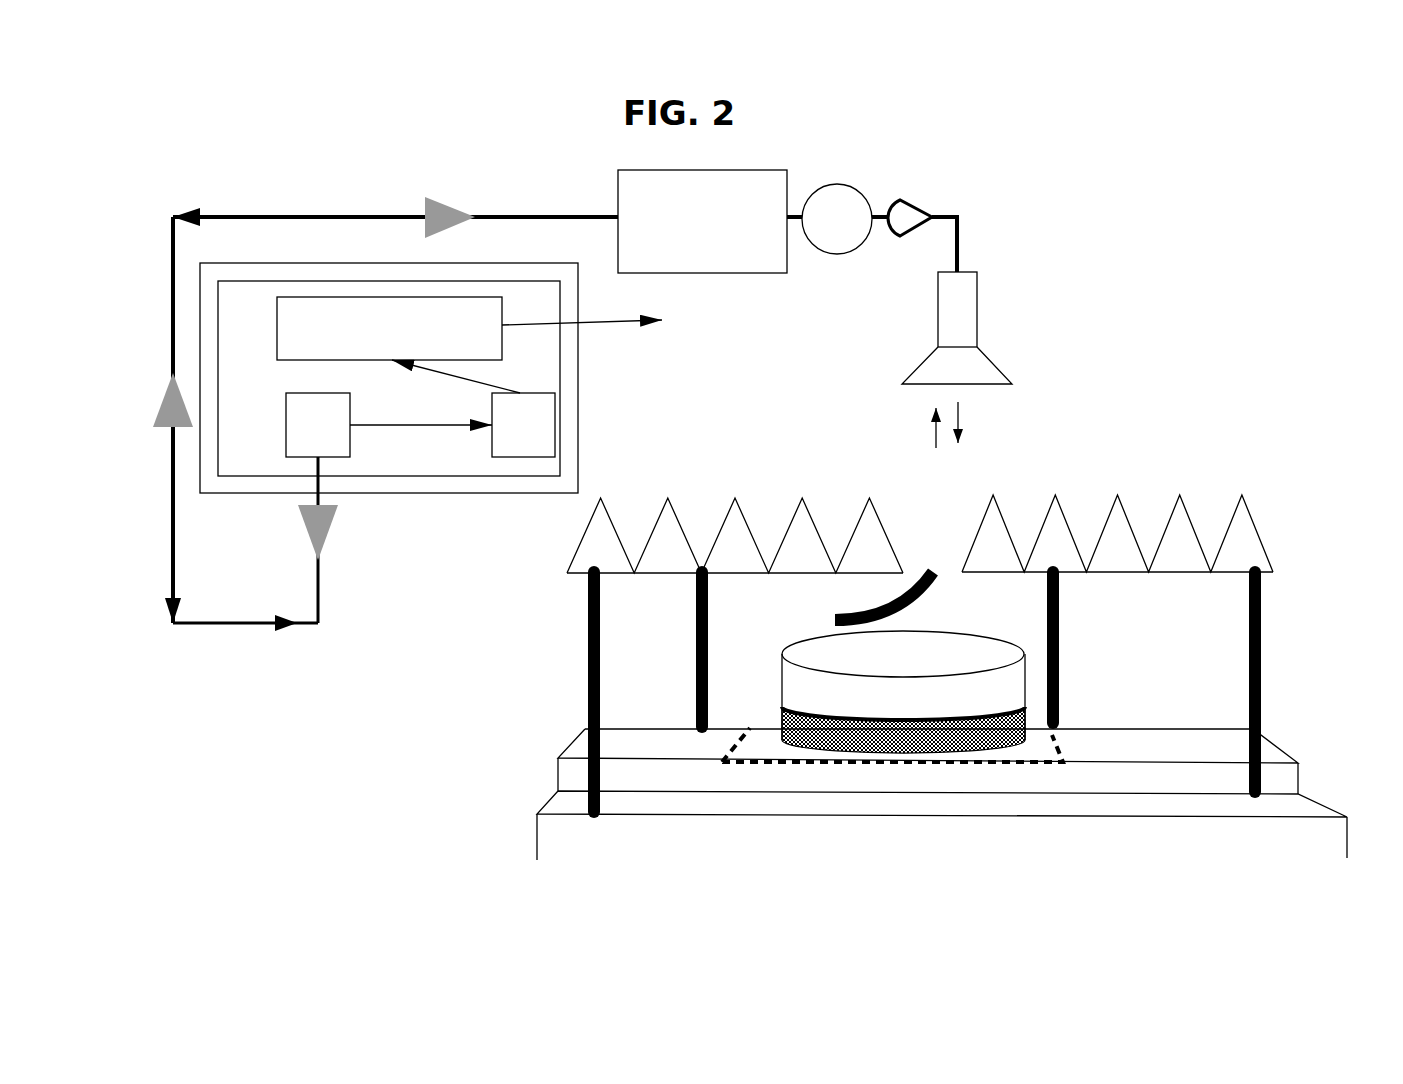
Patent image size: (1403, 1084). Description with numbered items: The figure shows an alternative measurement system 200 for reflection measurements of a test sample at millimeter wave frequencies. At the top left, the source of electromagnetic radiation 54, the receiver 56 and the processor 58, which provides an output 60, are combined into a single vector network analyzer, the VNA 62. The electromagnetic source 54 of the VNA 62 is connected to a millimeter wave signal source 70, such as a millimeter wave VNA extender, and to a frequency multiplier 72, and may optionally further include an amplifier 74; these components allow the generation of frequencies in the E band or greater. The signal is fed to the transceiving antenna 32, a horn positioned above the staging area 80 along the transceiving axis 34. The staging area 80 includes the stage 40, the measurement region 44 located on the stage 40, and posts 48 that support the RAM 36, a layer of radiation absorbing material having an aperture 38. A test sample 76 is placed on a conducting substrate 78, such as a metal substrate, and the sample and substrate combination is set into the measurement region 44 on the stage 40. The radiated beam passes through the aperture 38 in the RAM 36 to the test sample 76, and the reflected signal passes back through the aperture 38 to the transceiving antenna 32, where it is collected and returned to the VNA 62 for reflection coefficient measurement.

The measurement system 200 is at (1185, 228).
The transceiving antenna 32 is at (977, 308).
The transceiving axis 34 is at (998, 415).
The RAM 36 is at (1257, 525).
The aperture 38 is at (867, 602).
The stage 40 is at (673, 748).
The measurement region 44 is at (1038, 757).
The posts 48 is at (687, 672).
The source of electromagnetic radiation 54 is at (318, 425).
The receiver 56 is at (523, 425).
The processor 58 is at (389, 328).
The output 60 is at (610, 323).
The VNA 62 is at (389, 495).
The millimeter wave signal source 70 is at (618, 170).
The frequency multiplier 72 is at (838, 185).
The amplifier 74 is at (898, 202).
The test sample 76 is at (1025, 677).
The conducting substrate 78 is at (1025, 722).
The staging area 80 is at (558, 663).